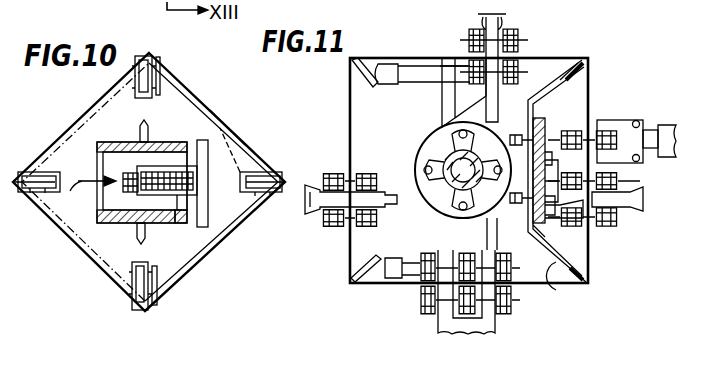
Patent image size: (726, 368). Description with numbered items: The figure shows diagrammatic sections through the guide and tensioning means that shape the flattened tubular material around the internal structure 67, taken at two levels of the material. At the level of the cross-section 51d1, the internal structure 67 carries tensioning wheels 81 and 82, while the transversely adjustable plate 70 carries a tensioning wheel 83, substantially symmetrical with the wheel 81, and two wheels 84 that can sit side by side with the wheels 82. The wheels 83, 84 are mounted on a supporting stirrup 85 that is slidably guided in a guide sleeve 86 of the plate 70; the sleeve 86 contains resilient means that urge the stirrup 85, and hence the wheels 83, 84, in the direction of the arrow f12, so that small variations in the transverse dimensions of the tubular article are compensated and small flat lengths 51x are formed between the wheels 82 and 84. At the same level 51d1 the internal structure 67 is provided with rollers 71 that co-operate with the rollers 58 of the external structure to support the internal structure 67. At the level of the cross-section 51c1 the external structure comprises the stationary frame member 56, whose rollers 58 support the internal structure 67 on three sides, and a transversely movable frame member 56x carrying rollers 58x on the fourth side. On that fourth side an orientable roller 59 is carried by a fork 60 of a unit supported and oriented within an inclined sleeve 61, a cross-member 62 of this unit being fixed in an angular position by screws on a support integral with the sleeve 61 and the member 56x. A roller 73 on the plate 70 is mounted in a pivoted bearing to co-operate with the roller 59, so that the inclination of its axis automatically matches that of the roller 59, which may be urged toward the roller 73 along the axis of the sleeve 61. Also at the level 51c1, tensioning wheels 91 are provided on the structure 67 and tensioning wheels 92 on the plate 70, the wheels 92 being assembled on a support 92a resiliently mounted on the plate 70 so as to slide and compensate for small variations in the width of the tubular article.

In FIG. 10, the internal structure 67 is at (110, 143).
In FIG. 11, the internal structure 67 is at (430, 140).
In FIG. 10, the plate 70 is at (208, 150).
In FIG. 11, the plate 70 is at (545, 218).
In FIG. 11, the rollers 71 is at (470, 68).
In FIG. 11, the roller 73 is at (545, 135).
In FIG. 10, the tensioning wheel 81 is at (22, 194).
In FIG. 10, the tensioning wheels 82 is at (146, 60).
In FIG. 10, the tensioning wheel 83 is at (283, 180).
In FIG. 10, the wheels 84 is at (166, 100).
In FIG. 10, the supporting stirrup 85 is at (246, 206).
In FIG. 10, the guide sleeve 86 is at (183, 226).
In FIG. 11, the tensioning wheels 91 is at (362, 62).
In FIG. 11, the tensioning wheels 92 is at (589, 61).
In FIG. 11, the support 92a is at (555, 285).
In FIG. 10, the small flat lengths 51x is at (162, 58).
In FIG. 10, the cross-section level 51d1 is at (212, 106).
In FIG. 11, the cross-section level 51c1 is at (348, 122).
In FIG. 11, the stationary frame member 56 is at (502, 17).
In FIG. 11, the rollers 58 is at (520, 33).
In FIG. 11, the roller 59 is at (608, 130).
In FIG. 11, the fork 60 is at (622, 155).
In FIG. 11, the inclined sleeve 61 is at (665, 158).
In FIG. 11, the cross-member 62 is at (638, 121).
In FIG. 11, the transversely movable frame member 56x is at (643, 198).
In FIG. 11, the rollers 58x is at (618, 220).
In FIG. 10, the arrow f12 is at (89, 190).